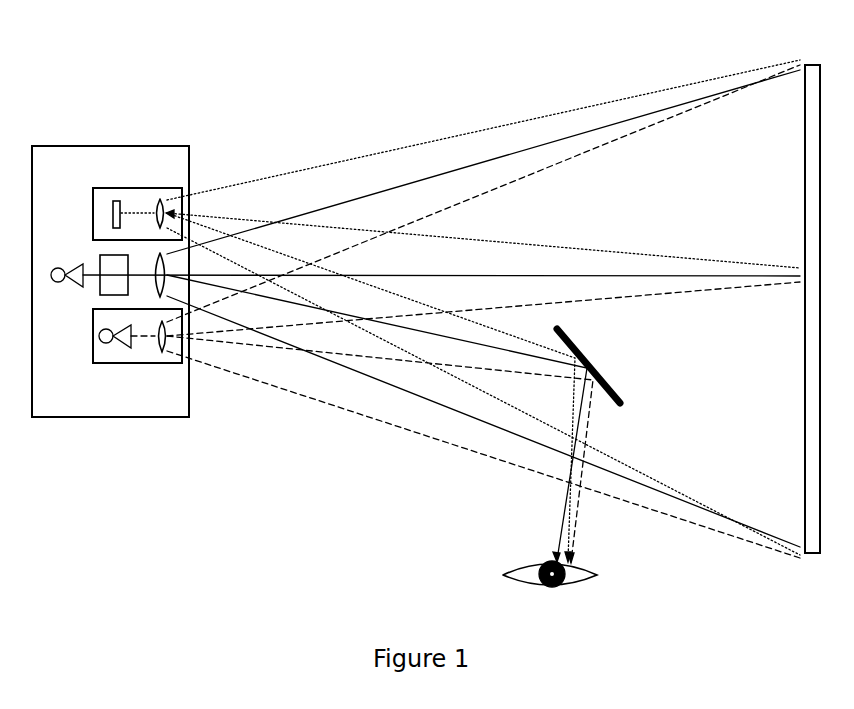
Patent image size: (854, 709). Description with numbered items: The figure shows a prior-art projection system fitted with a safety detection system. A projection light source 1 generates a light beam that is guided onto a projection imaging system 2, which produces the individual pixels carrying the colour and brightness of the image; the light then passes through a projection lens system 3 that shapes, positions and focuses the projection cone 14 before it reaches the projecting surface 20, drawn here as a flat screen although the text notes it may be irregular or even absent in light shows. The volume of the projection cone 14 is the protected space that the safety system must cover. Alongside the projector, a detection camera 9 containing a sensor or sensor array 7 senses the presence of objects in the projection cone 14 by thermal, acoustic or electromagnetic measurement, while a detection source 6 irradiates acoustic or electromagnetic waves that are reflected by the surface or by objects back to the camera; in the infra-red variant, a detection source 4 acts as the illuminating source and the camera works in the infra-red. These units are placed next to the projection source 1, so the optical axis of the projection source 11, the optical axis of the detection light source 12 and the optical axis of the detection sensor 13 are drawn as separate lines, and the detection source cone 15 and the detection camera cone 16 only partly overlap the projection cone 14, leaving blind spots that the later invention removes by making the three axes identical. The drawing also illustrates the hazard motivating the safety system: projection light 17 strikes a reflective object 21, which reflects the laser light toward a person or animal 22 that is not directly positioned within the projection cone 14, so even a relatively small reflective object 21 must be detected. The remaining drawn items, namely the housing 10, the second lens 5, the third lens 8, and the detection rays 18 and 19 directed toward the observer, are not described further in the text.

The projection light source 1 is at (63, 280).
The projection imaging system 2 is at (100, 262).
The projection lens system 3 is at (167, 255).
The detection source 4 is at (106, 343).
The second lens 5 is at (165, 352).
The detection source 6 is at (130, 363).
The sensor or sensor array 7 is at (114, 200).
The third lens 8 is at (157, 200).
The detection camera 9 is at (138, 188).
The projector housing 10 is at (98, 417).
The optical axis of the projection source 11 is at (720, 276).
The optical axis of the detection light source 12 is at (657, 295).
The optical axis of the detection sensor 13 is at (708, 262).
The projection cone 14 is at (628, 120).
The detection source cone 15 is at (672, 118).
The detection camera cone 16 is at (568, 110).
The projection light 17 is at (518, 352).
The second source ray to observer 18 is at (512, 376).
The third source ray to observer 19 is at (487, 325).
The projecting surface 20 is at (812, 65).
The reflective object 21 is at (620, 403).
The person or animal 22 is at (597, 575).